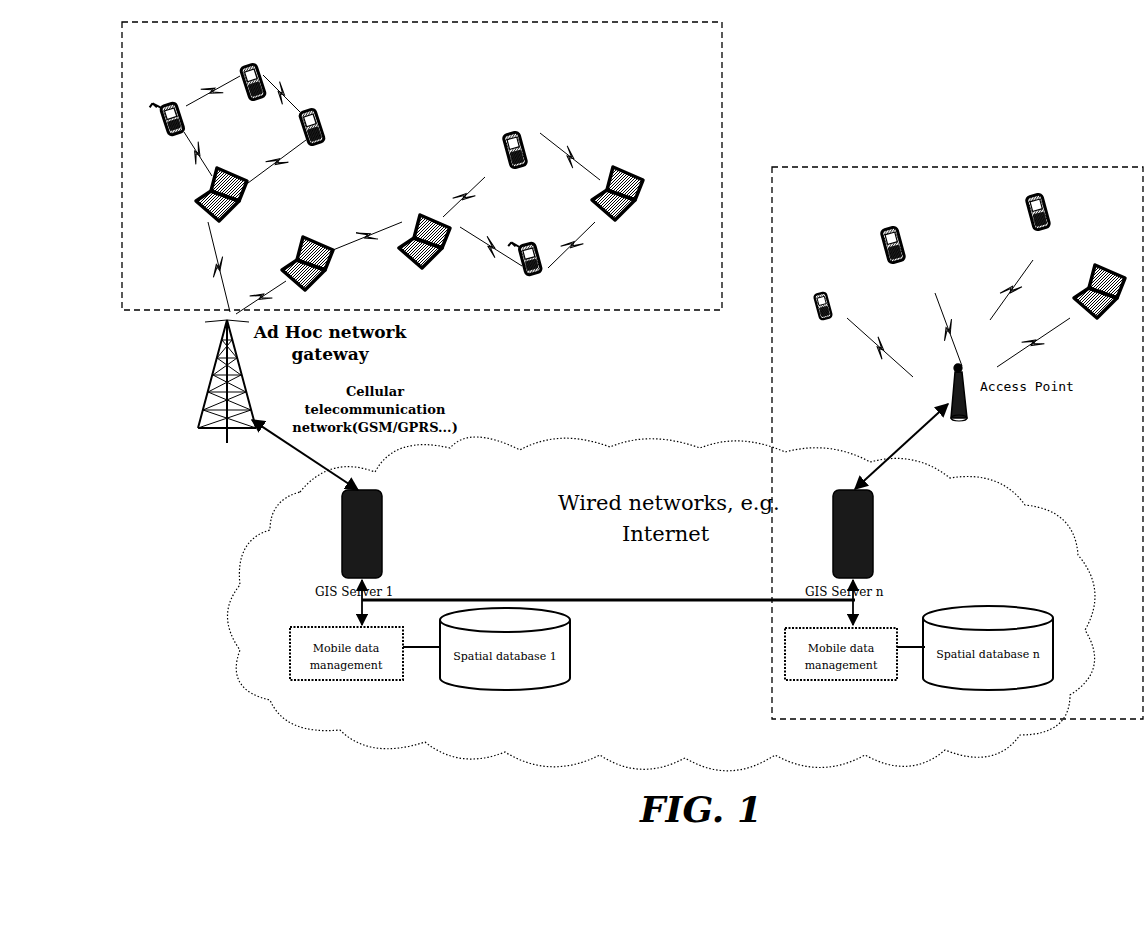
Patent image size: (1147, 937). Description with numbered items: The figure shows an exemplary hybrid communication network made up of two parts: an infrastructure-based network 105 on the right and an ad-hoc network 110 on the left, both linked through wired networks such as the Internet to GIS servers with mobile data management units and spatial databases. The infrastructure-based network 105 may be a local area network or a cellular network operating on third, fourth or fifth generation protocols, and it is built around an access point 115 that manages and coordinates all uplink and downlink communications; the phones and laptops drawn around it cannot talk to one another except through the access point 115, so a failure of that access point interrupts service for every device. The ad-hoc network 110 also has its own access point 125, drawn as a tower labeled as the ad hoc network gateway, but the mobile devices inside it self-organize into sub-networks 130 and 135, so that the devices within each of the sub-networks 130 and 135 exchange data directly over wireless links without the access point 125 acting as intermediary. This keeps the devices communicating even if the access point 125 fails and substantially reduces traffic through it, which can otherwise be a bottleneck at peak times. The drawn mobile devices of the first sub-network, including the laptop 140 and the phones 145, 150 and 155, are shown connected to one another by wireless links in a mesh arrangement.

The infrastructure-based network 105 is at (940, 167).
The ad-hoc network 110 is at (722, 52).
The access point 115 is at (967, 413).
The access point 125 is at (208, 397).
The sub-network 130 is at (284, 92).
The sub-network 135 is at (472, 182).
The laptop mobile device 140 is at (195, 200).
The mobile phone device 145 is at (326, 125).
The mobile phone device 150 is at (243, 78).
The mobile phone device with antenna 155 is at (162, 112).